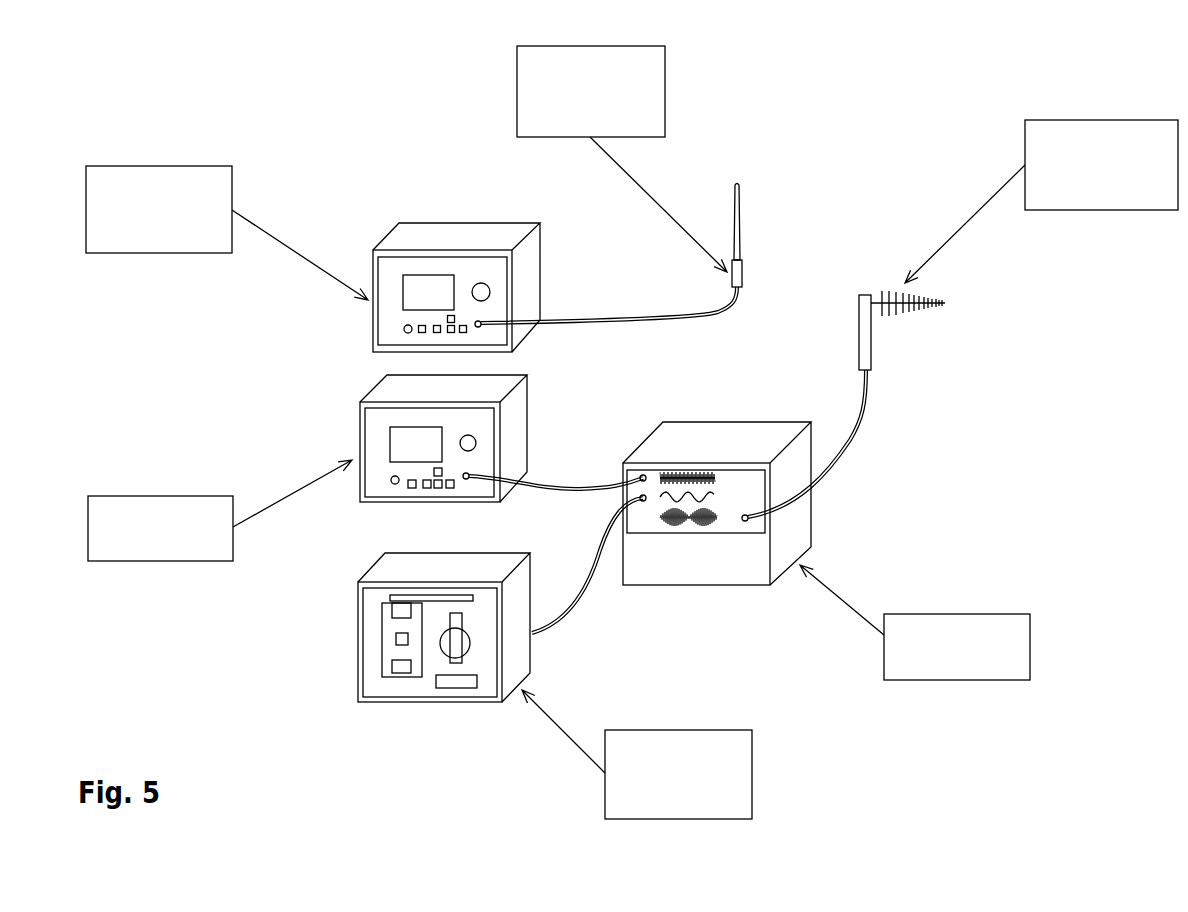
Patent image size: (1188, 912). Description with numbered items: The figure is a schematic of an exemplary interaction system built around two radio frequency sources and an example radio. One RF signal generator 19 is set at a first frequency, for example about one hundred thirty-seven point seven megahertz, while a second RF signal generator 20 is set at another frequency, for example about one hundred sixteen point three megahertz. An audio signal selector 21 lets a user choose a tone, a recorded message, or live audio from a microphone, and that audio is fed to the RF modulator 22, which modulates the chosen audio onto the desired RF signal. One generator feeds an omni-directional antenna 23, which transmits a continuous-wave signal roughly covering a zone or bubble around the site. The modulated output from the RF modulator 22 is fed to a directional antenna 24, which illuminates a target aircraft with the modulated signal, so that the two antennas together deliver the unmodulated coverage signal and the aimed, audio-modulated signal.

The RF signal generator 19 is at (160, 166).
The RF signal generator 20 is at (162, 496).
The audio signal selector 21 is at (752, 772).
The RF modulator 22 is at (1030, 645).
The omni-directional antenna 23 is at (517, 92).
The directional antenna 24 is at (1095, 120).